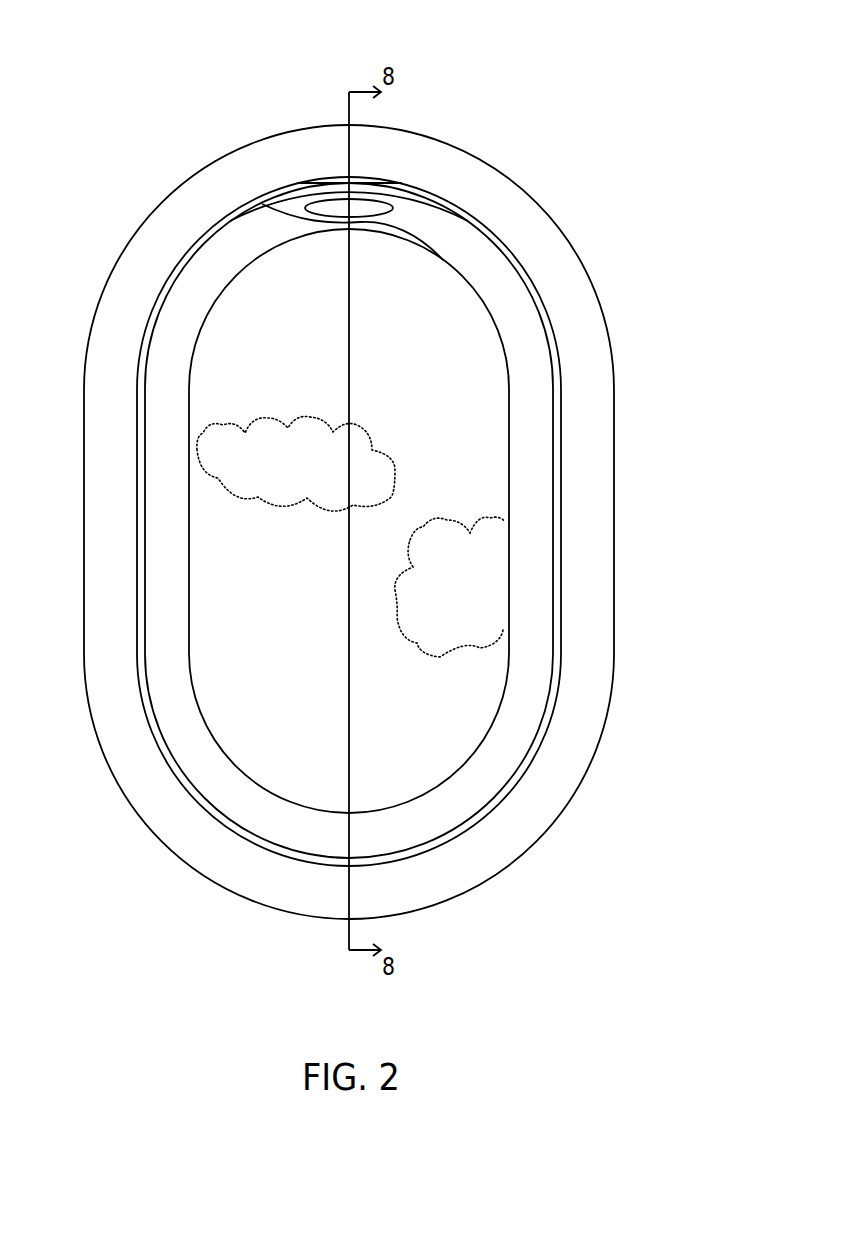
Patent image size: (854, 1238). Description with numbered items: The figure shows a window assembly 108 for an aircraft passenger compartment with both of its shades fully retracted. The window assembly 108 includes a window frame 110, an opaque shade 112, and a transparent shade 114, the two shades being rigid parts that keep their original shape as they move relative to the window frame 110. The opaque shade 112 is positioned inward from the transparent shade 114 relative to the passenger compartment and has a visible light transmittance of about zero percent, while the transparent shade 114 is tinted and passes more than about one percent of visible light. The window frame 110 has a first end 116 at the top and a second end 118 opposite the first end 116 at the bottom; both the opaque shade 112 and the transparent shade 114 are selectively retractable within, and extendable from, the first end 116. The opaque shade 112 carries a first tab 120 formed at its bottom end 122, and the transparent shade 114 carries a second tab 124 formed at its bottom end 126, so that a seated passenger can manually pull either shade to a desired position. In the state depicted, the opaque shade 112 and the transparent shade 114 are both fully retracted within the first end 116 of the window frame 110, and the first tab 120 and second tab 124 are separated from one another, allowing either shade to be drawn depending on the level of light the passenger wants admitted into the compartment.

The window assembly 108 is at (205, 57).
The window frame 110 is at (614, 560).
The opaque shade 112 is at (400, 189).
The transparent shade 114 is at (407, 208).
The first end 116 is at (432, 93).
The second end 118 is at (316, 948).
The first tab 120 is at (373, 188).
The bottom end 122 is at (300, 198).
The second tab 124 is at (437, 246).
The bottom end 126 is at (287, 220).